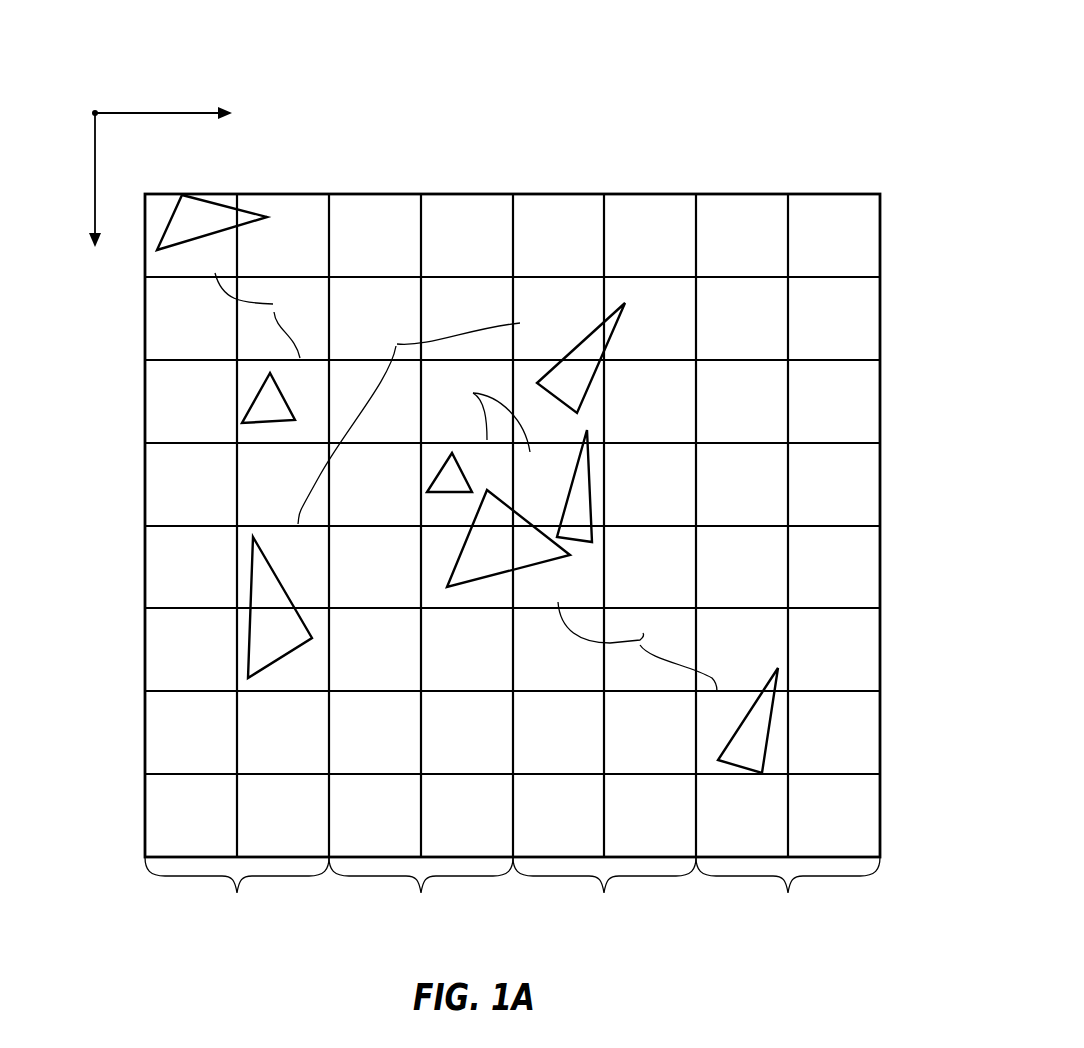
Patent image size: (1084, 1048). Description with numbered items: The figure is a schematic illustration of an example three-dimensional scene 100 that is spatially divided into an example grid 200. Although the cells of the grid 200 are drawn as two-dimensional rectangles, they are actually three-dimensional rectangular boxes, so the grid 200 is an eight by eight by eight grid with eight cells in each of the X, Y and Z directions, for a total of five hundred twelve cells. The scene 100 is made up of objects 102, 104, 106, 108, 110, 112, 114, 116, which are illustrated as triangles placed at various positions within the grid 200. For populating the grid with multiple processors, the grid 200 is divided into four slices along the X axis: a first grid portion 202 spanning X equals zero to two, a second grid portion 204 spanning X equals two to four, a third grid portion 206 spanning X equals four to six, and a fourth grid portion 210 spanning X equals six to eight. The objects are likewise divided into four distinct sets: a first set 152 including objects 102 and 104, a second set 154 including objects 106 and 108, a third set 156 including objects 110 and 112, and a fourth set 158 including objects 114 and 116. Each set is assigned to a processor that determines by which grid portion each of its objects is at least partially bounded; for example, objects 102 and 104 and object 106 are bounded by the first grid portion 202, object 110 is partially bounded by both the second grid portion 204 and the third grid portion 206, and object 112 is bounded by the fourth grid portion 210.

The three-dimensional scene 100 is at (682, 78).
The grid 200 is at (882, 240).
The object 102 is at (183, 243).
The object 104 is at (282, 367).
The object 106 is at (322, 534).
The object 108 is at (578, 343).
The object 110 is at (527, 567).
The object 112 is at (693, 703).
The object 114 is at (463, 451).
The object 116 is at (567, 493).
The first set of objects 152 is at (264, 315).
The second set of objects 154 is at (409, 422).
The third set of objects 156 is at (637, 646).
The fourth set of objects 158 is at (482, 416).
The first grid portion 202 is at (237, 890).
The second grid portion 204 is at (421, 890).
The third grid portion 206 is at (604, 890).
The fourth grid portion 210 is at (788, 890).